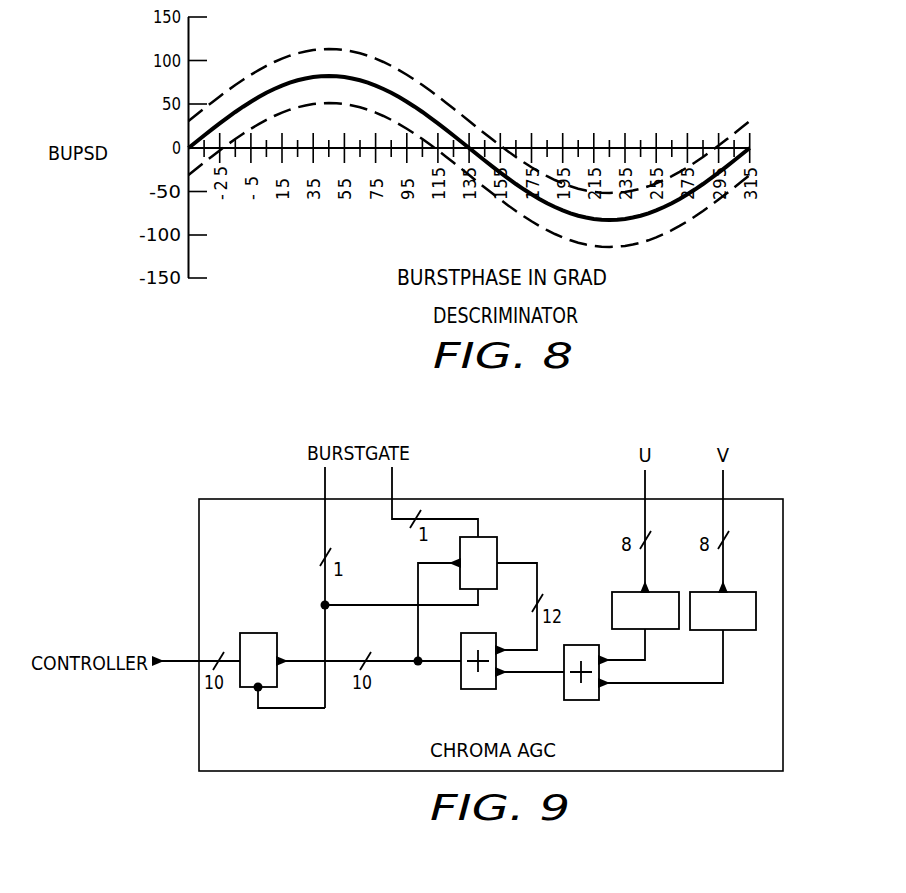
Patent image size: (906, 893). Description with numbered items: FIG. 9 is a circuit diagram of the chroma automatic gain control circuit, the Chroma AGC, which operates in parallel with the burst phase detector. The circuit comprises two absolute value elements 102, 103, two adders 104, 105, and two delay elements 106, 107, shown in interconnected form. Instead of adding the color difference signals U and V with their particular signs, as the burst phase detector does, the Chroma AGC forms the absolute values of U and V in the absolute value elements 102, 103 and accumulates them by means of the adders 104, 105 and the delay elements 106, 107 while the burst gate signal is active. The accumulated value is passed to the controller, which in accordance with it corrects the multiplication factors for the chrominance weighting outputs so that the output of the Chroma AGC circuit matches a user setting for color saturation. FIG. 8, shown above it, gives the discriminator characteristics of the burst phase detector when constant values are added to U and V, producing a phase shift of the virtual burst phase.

The absolute value element 102 is at (730, 630).
The absolute value element 103 is at (650, 629).
The adder 104 is at (584, 700).
The adder 105 is at (475, 689).
The delay element 106 is at (497, 556).
The delay element 107 is at (262, 633).